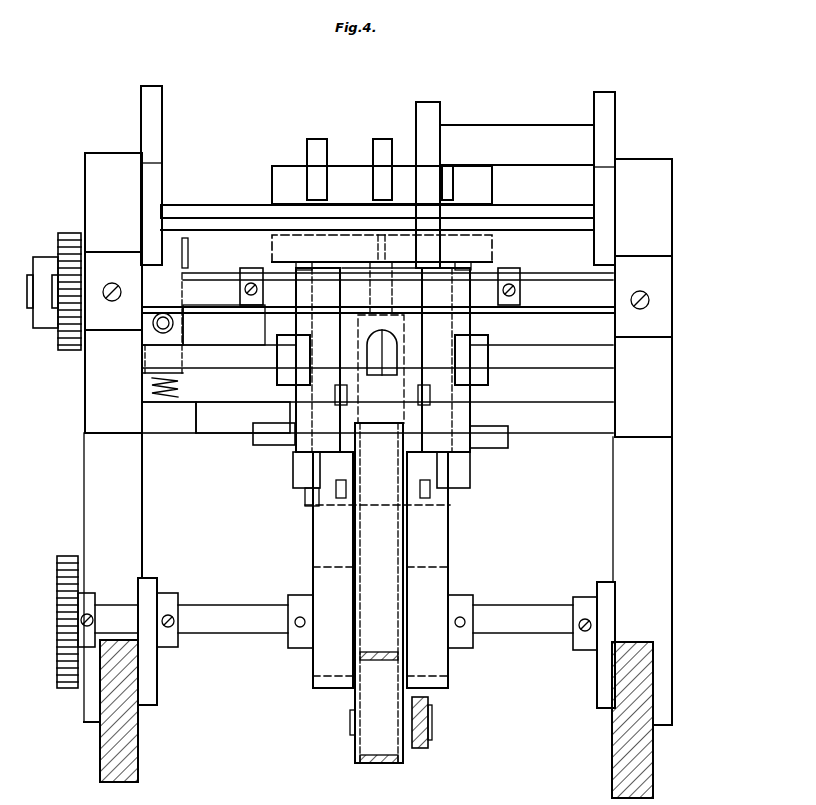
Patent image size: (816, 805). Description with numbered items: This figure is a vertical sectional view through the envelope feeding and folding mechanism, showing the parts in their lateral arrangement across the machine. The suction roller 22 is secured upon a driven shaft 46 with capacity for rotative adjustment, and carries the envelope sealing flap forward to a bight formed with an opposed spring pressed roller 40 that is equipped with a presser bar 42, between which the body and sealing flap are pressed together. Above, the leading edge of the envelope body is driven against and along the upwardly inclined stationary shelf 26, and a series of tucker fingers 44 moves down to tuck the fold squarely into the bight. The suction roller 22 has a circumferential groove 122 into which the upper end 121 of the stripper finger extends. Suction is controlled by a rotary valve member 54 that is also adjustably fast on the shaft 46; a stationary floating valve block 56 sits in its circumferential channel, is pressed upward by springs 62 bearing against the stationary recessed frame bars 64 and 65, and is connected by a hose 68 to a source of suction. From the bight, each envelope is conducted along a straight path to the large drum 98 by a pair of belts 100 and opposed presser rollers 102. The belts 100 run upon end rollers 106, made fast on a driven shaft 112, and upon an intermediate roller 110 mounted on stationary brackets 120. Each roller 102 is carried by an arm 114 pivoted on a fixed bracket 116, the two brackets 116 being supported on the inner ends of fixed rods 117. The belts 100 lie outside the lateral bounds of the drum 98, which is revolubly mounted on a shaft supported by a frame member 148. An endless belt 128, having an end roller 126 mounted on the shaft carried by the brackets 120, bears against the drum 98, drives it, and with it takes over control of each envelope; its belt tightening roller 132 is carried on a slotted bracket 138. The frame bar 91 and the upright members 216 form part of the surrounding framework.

The upright post 216 is at (148, 108).
The stationary shelf 26 is at (283, 172).
The tucker fingers 44 is at (378, 152).
The cross bar 91 is at (377, 205).
The frame member 148 is at (428, 250).
The rotary valve member 54 is at (186, 252).
The suction roller 22 is at (272, 268).
The fixed rods 117 is at (200, 365).
The presser bar 42 is at (251, 310).
The driven shaft 46 is at (223, 309).
The spring pressed roller 40 is at (302, 265).
The circumferential groove 122 is at (380, 270).
The hose 68 is at (150, 322).
The floating valve block 56 is at (148, 338).
The springs 62 is at (150, 388).
The recessed frame bar 65 is at (170, 420).
The recessed frame bar 64 is at (226, 420).
The fixed bracket 116 is at (293, 392).
The presser rollers 102 is at (322, 345).
The upper end of stripper finger 121 is at (382, 368).
The large drum 98 is at (393, 312).
The endless belt 128 is at (390, 662).
The arm 114 is at (296, 459).
The stationary brackets 120 is at (297, 476).
The intermediate roller 110 is at (310, 500).
The belts 100 is at (318, 546).
The end rollers 106 is at (310, 590).
The driven shaft 112 is at (230, 628).
The end roller 126 is at (353, 700).
The bracket 138 is at (430, 742).
The belt tightening roller 132 is at (412, 799).